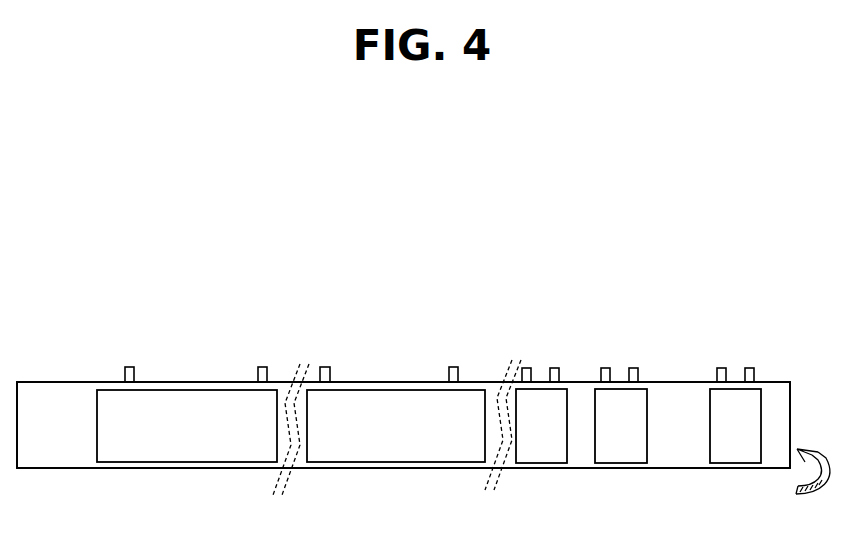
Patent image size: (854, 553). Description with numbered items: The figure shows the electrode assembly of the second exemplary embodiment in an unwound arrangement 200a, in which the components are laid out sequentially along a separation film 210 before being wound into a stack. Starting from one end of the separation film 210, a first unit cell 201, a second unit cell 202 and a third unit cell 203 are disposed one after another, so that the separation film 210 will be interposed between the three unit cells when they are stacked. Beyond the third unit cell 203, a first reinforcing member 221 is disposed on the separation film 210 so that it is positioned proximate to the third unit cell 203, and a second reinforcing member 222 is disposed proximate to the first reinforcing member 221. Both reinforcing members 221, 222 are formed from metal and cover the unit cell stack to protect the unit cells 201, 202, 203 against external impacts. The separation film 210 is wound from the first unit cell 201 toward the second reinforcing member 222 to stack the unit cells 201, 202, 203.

The arrangement 200a is at (60, 291).
The separation film 210 is at (667, 390).
The second reinforcing member 222 is at (177, 447).
The first reinforcing member 221 is at (378, 447).
The third unit cell 203 is at (543, 447).
The second unit cell 202 is at (623, 447).
The first unit cell 201 is at (739, 444).